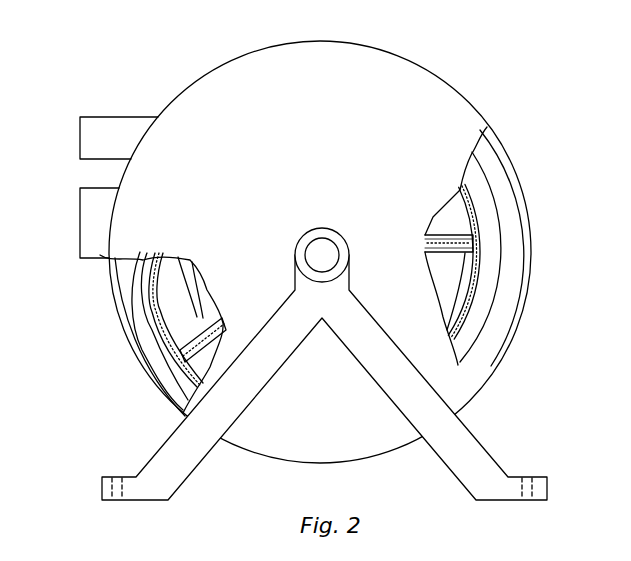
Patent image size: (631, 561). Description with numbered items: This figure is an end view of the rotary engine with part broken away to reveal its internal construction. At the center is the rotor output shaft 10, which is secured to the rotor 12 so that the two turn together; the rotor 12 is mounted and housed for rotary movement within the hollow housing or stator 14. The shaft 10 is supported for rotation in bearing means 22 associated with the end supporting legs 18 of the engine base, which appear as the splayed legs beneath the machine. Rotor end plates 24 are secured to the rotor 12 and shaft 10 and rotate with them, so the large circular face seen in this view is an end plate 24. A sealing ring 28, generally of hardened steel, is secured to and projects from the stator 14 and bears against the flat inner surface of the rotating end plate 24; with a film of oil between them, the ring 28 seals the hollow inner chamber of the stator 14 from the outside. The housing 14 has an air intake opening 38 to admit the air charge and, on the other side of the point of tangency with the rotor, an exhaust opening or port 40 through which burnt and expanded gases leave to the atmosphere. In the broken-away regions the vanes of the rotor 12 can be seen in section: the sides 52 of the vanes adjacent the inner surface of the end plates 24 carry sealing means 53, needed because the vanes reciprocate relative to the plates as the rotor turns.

The rotor output shaft 10 is at (333, 253).
The rotor 12 is at (165, 262).
The hollow housing or stator 14 is at (143, 325).
The end supporting legs 18 is at (444, 462).
The bearing means 22 is at (332, 233).
The rotor end plates 24 is at (203, 75).
The sealing ring 28 is at (152, 292).
The air intake opening 38 is at (90, 135).
The exhaust opening or port 40 is at (90, 219).
The sides of vanes 52 is at (176, 350).
The sealing means 53 is at (185, 362).